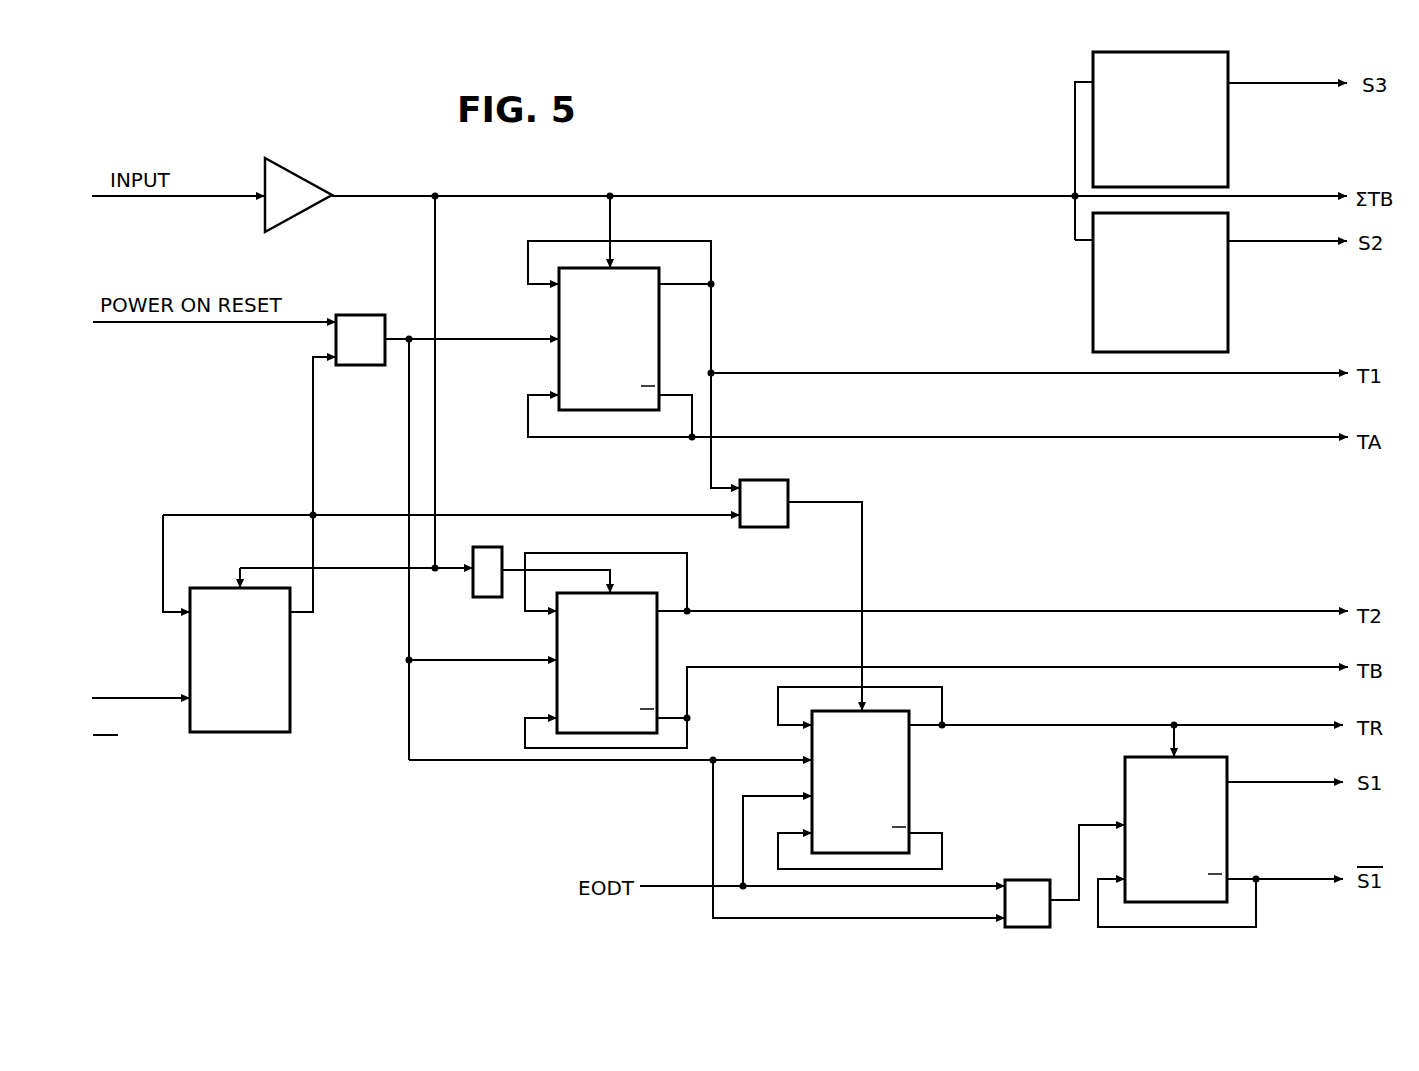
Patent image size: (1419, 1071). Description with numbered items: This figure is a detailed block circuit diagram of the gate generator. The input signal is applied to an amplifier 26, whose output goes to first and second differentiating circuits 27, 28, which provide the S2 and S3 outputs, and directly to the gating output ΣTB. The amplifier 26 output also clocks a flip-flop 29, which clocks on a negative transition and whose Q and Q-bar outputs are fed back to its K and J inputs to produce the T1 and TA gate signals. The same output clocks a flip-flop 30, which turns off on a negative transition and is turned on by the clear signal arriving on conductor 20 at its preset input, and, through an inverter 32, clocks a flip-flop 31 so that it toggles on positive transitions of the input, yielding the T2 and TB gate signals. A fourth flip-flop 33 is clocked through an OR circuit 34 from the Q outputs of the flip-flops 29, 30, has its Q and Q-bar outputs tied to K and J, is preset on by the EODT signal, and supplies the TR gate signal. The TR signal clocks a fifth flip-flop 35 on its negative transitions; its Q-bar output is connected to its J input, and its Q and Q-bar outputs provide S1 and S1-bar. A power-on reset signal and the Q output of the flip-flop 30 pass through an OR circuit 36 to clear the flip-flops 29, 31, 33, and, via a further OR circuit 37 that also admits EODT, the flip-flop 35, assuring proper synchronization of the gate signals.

The conductor 20 is at (136, 698).
The amplifier 26 is at (310, 180).
The first differentiating circuit 27 is at (1230, 230).
The second differentiating circuit 28 is at (1230, 68).
The flip-flop 29 is at (559, 308).
The flip-flop 30 is at (292, 688).
The flip-flop 31 is at (657, 648).
The inverter 32 is at (482, 547).
The fourth flip-flop 33 is at (909, 788).
The OR circuit 34 is at (790, 484).
The fifth flip-flop 35 is at (1125, 775).
The OR circuit 36 is at (367, 315).
The OR circuit 37 is at (1019, 880).